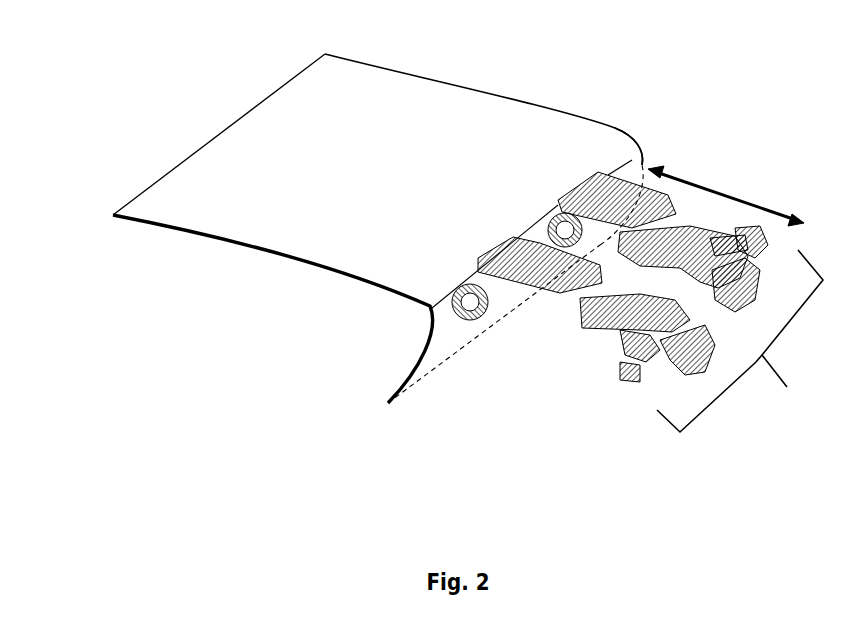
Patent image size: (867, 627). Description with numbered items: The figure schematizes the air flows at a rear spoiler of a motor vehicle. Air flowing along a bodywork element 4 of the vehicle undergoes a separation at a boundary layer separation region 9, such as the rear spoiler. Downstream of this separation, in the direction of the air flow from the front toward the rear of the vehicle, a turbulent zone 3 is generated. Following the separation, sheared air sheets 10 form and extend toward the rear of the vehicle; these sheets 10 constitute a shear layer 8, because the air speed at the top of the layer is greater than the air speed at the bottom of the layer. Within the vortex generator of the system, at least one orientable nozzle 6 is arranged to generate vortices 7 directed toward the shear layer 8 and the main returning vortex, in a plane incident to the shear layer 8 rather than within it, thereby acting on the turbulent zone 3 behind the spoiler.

The turbulent zone 3 is at (726, 186).
The bodywork element 4 is at (198, 232).
The orientable nozzle 6 is at (470, 306).
The vortices 7 is at (474, 318).
The shear layer 8 is at (740, 341).
The boundary layer separation region 9 is at (620, 162).
The sheared air sheets 10 is at (593, 185).